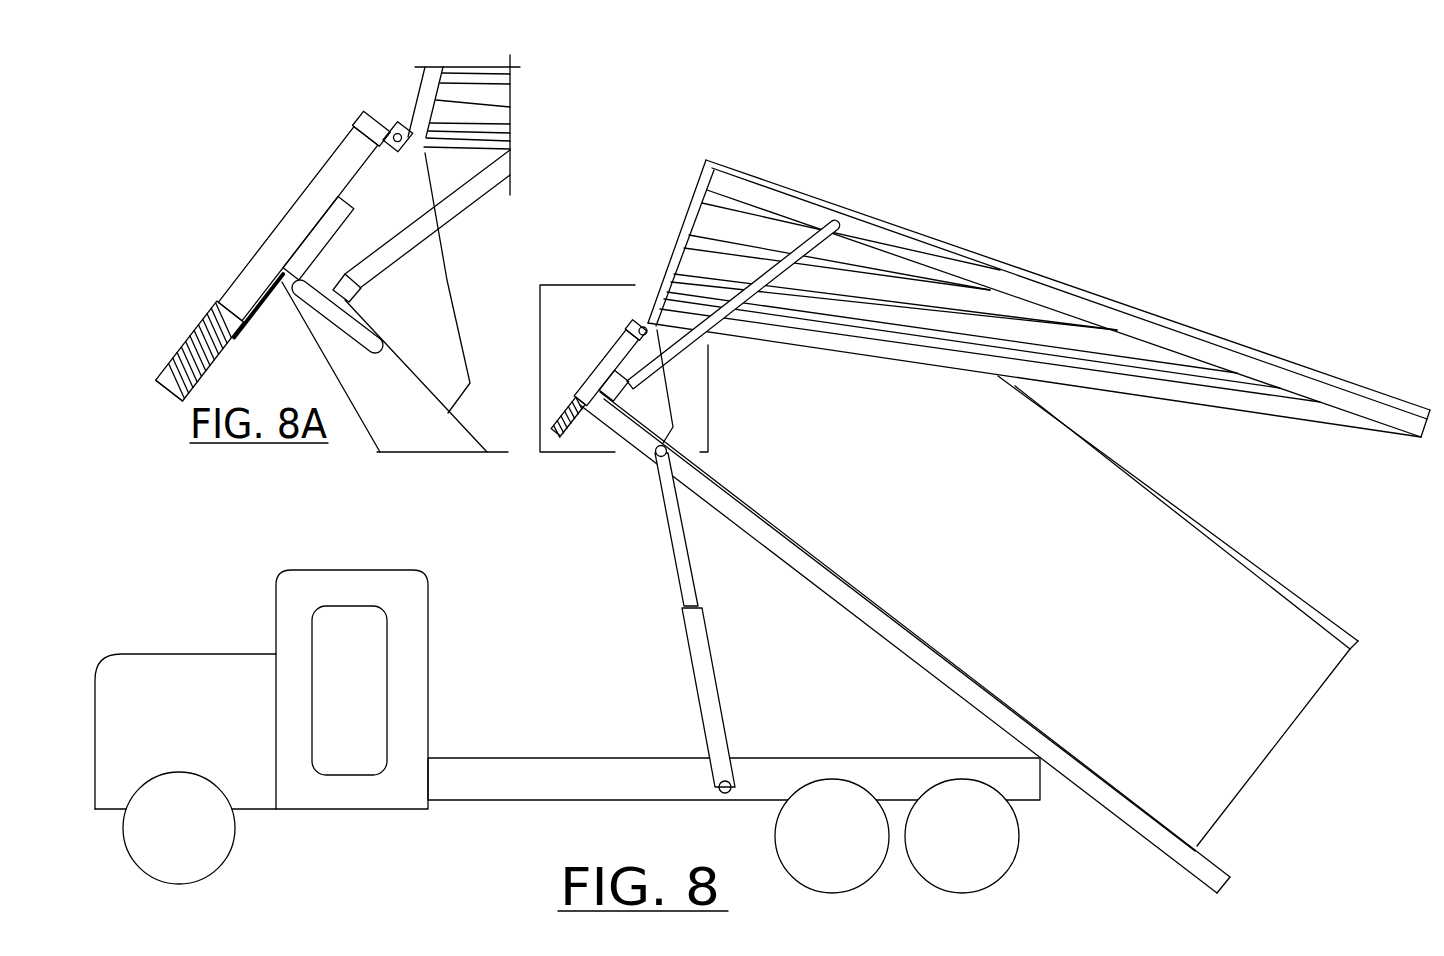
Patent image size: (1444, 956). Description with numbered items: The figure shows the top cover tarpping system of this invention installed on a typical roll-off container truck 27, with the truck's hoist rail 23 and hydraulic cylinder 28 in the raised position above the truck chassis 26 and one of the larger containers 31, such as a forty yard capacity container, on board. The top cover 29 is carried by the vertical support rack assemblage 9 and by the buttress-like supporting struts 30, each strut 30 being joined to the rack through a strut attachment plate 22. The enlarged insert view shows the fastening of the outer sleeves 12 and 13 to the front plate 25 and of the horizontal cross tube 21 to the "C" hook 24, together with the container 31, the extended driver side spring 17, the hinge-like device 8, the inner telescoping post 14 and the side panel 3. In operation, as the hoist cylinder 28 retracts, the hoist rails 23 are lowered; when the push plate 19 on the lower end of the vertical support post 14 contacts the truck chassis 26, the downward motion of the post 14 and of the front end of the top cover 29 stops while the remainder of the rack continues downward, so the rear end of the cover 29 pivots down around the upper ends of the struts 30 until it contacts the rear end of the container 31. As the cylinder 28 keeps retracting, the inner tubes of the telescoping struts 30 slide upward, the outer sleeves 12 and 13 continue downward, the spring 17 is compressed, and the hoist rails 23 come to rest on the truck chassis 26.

In FIG. 8A, the side panel 3 is at (457, 105).
In FIG. 8A, the hinge-like device 8 is at (395, 120).
In FIG. 8, the vertical support rack assemblage 9 is at (598, 355).
In FIG. 8A, the outer sleeve 12 is at (288, 224).
In FIG. 8A, the outer sleeve 13 is at (297, 224).
In FIG. 8A, the inner telescoping post 14 is at (264, 238).
In FIG. 8A, the driver side spring 17 is at (196, 345).
In FIG. 8A, the push plate 19 is at (149, 363).
In FIG. 8A, the horizontal cross tube 21 is at (291, 235).
In FIG. 8A, the strut attachment plate 22 is at (353, 293).
In FIG. 8A, the hoist rail 23 is at (384, 366).
In FIG. 8, the hoist rail 23 is at (905, 663).
In FIG. 8A, the "C" hook 24 is at (333, 315).
In FIG. 8A, the front plate 25 is at (258, 339).
In FIG. 8, the truck chassis 26 is at (720, 825).
In FIG. 8, the roll-off container truck 27 is at (261, 690).
In FIG. 8, the hydraulic cylinder 28 is at (624, 620).
In FIG. 8, the top cover 29 is at (1039, 298).
In FIG. 8A, the supporting strut 30 is at (427, 219).
In FIG. 8, the supporting strut 30 is at (719, 313).
In FIG. 8A, the container 31 is at (418, 271).
In FIG. 8, the container 31 is at (1178, 611).